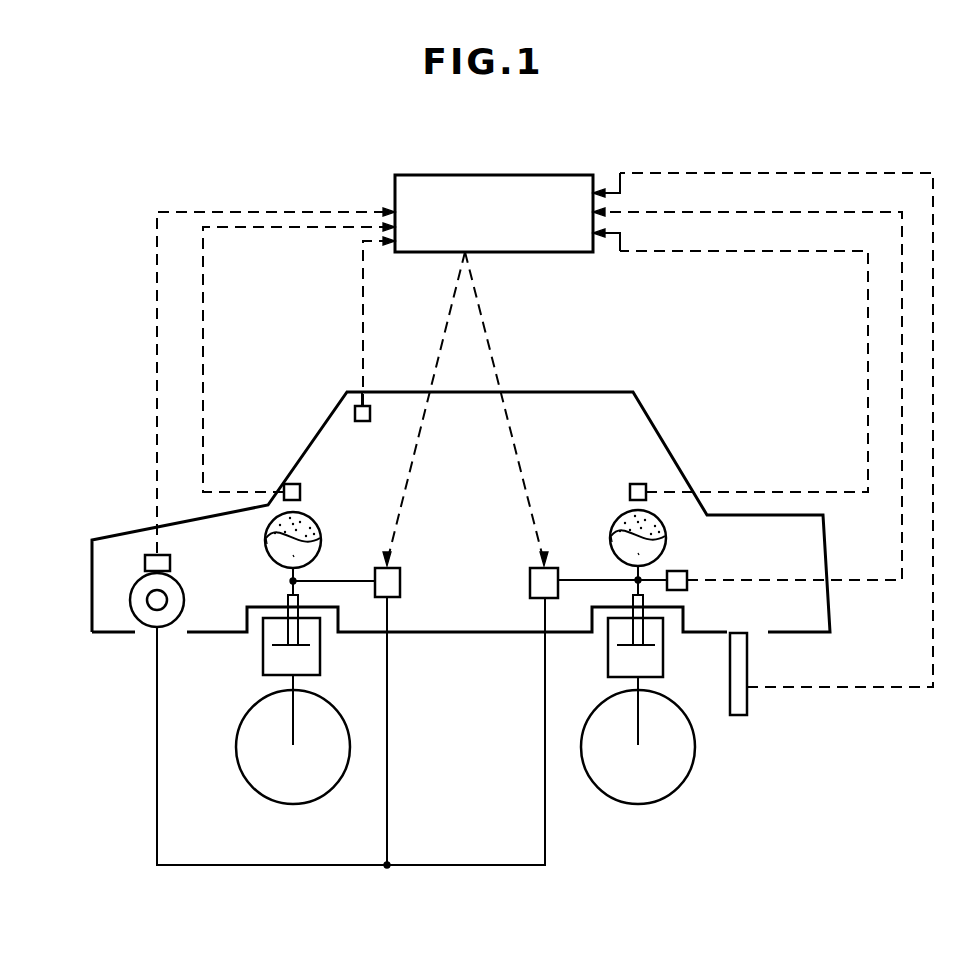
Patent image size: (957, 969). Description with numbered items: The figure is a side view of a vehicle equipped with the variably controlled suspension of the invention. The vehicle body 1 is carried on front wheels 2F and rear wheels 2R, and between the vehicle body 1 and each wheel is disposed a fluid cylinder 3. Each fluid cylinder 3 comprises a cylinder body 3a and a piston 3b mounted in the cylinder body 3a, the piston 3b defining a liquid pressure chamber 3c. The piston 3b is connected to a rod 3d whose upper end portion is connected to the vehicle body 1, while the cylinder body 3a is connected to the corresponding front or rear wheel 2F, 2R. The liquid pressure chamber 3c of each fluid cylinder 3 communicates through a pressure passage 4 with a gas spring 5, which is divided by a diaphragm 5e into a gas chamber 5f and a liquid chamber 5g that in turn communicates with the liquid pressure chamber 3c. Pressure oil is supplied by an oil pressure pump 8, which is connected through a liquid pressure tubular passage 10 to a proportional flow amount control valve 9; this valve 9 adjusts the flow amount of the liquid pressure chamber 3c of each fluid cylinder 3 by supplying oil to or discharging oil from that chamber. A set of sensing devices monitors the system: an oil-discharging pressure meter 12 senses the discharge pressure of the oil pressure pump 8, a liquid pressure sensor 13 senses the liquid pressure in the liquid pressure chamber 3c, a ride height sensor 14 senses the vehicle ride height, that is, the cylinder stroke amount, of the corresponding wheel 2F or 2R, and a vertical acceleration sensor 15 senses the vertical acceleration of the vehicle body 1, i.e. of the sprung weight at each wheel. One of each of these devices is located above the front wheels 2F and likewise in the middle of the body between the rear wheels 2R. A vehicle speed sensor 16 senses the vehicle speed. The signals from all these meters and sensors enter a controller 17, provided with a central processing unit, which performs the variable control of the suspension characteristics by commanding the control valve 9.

The vehicle body 1 is at (582, 388).
The front wheels 2F is at (343, 782).
The rear wheels 2R is at (680, 790).
The fluid cylinder 3 is at (250, 662).
The cylinder body 3a is at (320, 645).
The piston 3b is at (320, 675).
The liquid pressure chamber 3c is at (278, 671).
The rod 3d is at (247, 613).
The pressure passage 4 is at (318, 576).
The gas spring 5 is at (270, 506).
The diaphragm 5e is at (268, 553).
The gas chamber 5f is at (312, 526).
The oil chamber 5g is at (297, 551).
The oil pressure pump 8 is at (130, 598).
The proportional flow amount control valve 9 is at (402, 580).
The liquid pressure tubular passage 10 is at (330, 865).
The oil-discharging pressure meter 12 is at (165, 555).
The liquid pressure sensor 13 is at (687, 572).
The ride height sensor 14 is at (747, 657).
The vertical acceleration sensor 15 is at (300, 486).
The vehicle speed sensor 16 is at (362, 421).
The controller 17 is at (444, 175).